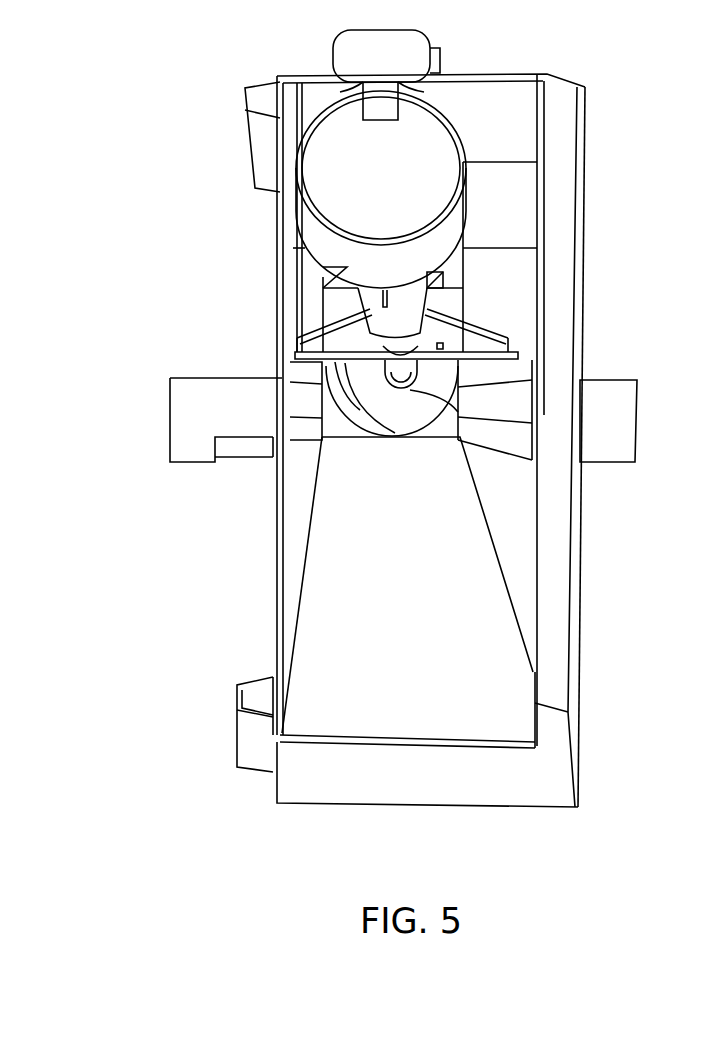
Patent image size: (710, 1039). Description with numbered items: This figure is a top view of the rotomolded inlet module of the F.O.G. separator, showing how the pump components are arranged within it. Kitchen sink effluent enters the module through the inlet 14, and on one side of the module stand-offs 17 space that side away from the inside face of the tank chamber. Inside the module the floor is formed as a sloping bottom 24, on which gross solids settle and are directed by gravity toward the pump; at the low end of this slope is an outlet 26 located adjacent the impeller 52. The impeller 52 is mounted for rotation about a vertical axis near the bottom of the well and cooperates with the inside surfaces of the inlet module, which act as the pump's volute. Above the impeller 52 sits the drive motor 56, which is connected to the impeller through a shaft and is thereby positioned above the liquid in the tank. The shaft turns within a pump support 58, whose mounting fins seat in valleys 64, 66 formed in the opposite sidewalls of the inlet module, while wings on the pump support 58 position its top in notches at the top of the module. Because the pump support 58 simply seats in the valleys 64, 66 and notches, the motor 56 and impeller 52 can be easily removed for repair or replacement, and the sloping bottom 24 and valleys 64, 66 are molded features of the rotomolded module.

The inlet 14 is at (190, 408).
The stand-offs 17 is at (258, 140).
The sloping bottom 24 is at (421, 584).
The outlet 26 is at (613, 443).
The impeller 52 is at (380, 408).
The drive motor 56 is at (400, 189).
The pump support 58 is at (415, 300).
The valley 64 is at (305, 297).
The valley 66 is at (520, 313).